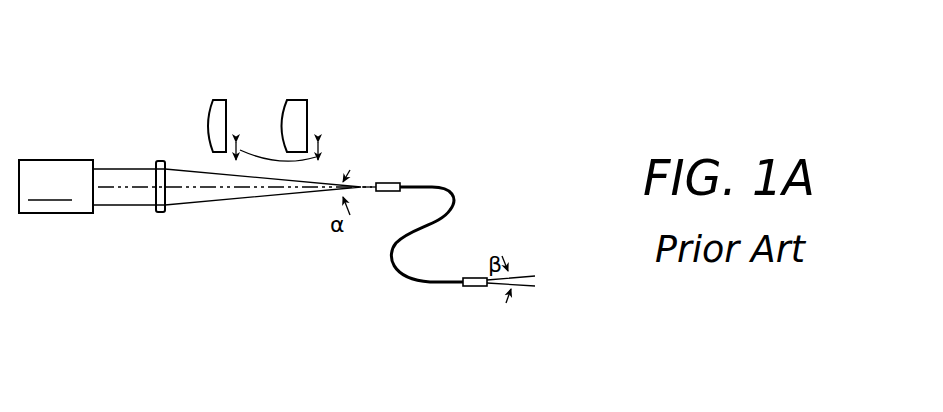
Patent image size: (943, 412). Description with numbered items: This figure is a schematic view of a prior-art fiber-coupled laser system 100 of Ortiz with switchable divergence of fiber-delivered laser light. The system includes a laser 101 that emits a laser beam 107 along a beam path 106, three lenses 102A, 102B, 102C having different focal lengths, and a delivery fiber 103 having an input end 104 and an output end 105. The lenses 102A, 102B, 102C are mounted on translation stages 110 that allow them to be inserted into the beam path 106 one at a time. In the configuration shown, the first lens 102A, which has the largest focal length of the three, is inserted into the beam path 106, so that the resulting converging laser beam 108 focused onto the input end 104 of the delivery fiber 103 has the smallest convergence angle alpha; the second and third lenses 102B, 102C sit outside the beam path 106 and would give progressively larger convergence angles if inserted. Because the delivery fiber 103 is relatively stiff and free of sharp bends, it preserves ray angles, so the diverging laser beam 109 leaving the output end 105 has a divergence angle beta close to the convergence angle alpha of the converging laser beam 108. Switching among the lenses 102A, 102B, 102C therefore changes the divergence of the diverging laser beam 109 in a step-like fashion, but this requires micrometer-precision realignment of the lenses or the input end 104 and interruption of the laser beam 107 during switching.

The fiber-coupled laser system 100 is at (478, 68).
The laser 101 is at (56, 186).
The first lens 102A is at (157, 215).
The second lens 102B is at (226, 98).
The third lens 102C is at (305, 98).
The delivery fiber 103 is at (461, 238).
The input end 104 is at (392, 182).
The output end 105 is at (470, 288).
The beam path 106 is at (114, 151).
The laser beam 107 is at (108, 200).
The converging laser beam 108 is at (235, 195).
The diverging laser beam 109 is at (522, 288).
The translation stages 110 is at (321, 158).